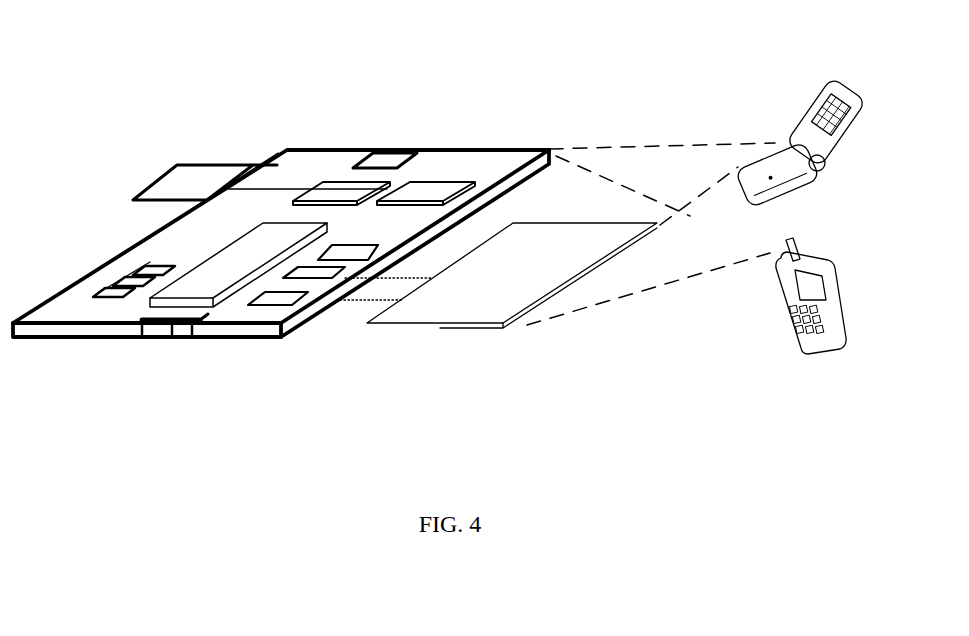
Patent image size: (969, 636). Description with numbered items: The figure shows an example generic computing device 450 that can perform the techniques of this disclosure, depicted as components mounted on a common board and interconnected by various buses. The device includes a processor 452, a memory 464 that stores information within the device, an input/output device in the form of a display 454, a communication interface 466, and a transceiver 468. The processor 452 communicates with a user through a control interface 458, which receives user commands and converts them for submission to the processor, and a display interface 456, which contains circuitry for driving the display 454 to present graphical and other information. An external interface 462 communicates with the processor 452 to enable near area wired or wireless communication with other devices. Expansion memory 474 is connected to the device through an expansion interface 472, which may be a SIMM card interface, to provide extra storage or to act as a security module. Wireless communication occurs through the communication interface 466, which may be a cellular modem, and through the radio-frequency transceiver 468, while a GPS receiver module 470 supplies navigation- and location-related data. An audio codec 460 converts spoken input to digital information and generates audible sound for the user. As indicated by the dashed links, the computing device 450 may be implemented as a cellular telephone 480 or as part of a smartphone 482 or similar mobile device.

The computing device 450 is at (254, 112).
The processor 452 is at (200, 340).
The display 454 is at (507, 328).
The display interface 456 is at (297, 337).
The control interface 458 is at (337, 307).
The audio codec 460 is at (355, 307).
The external interface 462 is at (163, 340).
The memory 464 is at (98, 273).
The communication interface 466 is at (338, 192).
The transceiver 468 is at (423, 192).
The GPS receiver module 470 is at (381, 160).
The expansion interface 472 is at (245, 163).
The expansion memory 474 is at (173, 165).
The cellular telephone 480 is at (817, 83).
The smartphone 482 is at (787, 238).